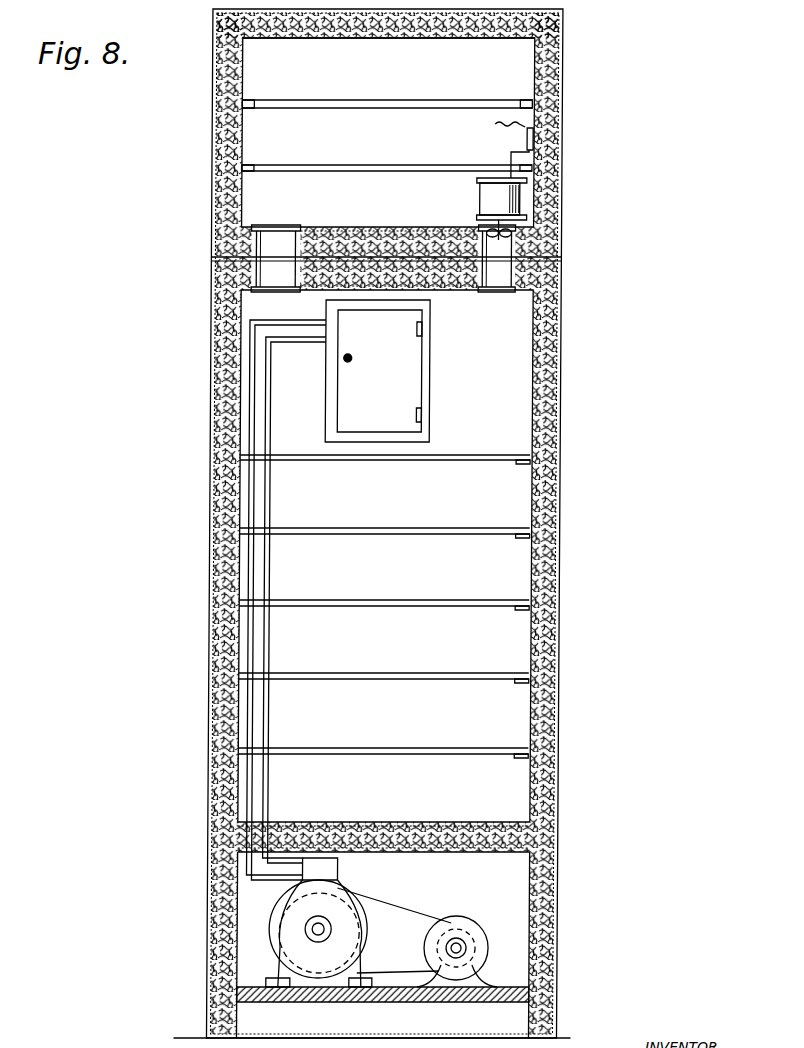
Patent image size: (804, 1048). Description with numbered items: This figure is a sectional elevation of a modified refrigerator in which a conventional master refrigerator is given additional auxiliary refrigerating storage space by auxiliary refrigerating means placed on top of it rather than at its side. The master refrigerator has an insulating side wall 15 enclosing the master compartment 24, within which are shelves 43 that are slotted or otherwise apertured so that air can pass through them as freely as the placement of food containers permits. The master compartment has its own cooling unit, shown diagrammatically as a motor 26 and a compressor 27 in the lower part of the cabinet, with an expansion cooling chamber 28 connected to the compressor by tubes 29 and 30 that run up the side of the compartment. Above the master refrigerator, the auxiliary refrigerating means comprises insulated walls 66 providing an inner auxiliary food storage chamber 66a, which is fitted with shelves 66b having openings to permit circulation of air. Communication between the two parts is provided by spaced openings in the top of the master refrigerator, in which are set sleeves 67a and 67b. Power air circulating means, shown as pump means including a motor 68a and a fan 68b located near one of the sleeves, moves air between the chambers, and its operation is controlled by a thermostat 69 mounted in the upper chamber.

The insulating side wall 15 is at (215, 607).
The master refrigerator compartment 24 is at (383, 661).
The motor 26 is at (487, 913).
The compressor 27 is at (343, 876).
The expansion cooling chamber 28 is at (430, 420).
The tube 29 is at (258, 562).
The tube 30 is at (272, 586).
The shelves 43 is at (410, 528).
The insulated walls 66 is at (563, 82).
The auxiliary food storage chamber 66a is at (387, 84).
The shelves 66b is at (291, 165).
The sleeve 67a is at (295, 281).
The sleeve 67b is at (487, 293).
The motor 68a is at (480, 204).
The fan 68b is at (510, 234).
The thermostat 69 is at (528, 133).